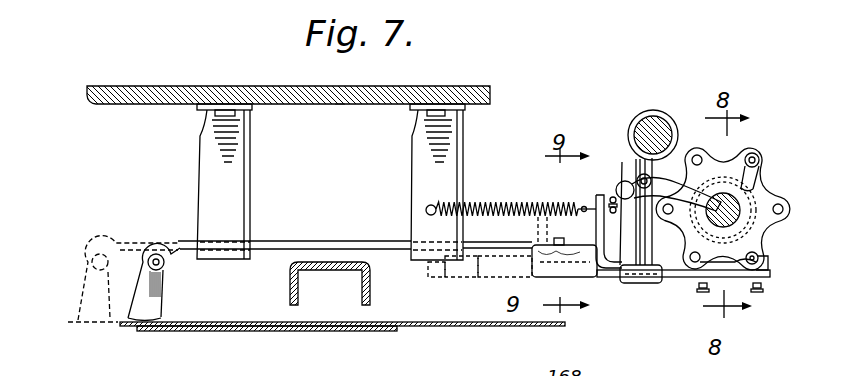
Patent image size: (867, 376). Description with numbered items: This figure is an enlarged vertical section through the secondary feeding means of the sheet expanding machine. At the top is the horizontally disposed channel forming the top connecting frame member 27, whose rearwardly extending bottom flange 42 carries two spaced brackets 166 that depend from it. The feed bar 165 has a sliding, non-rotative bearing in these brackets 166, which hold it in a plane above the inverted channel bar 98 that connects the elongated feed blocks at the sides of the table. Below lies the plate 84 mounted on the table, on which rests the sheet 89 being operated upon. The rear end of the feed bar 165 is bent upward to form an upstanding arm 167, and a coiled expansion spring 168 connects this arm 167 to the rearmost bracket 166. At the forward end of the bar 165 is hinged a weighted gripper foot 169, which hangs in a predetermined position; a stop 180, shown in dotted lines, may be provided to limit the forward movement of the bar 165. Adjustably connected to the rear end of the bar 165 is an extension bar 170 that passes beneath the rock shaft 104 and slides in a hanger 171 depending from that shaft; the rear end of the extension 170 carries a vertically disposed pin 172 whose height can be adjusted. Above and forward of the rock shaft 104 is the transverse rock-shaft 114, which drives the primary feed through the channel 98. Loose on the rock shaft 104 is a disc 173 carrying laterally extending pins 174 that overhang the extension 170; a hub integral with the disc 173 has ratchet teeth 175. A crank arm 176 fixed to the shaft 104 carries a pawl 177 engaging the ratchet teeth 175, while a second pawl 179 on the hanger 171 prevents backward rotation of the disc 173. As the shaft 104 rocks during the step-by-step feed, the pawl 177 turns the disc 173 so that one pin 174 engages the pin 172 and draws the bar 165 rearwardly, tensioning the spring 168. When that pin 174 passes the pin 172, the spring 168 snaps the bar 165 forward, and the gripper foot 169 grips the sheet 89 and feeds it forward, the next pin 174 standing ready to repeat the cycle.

The top connecting frame member 27 is at (145, 96).
The bottom flange 42 is at (333, 105).
The brackets 166 is at (241, 167).
The feed bar 165 is at (321, 240).
The gripper foot 169 is at (163, 268).
The inverted channel bar 98 is at (291, 288).
The sheet 89 is at (261, 322).
The plate 84 is at (292, 332).
The coiled expansion spring 168 is at (486, 203).
The stop 180 is at (437, 278).
The extension bar 170 is at (612, 278).
The hanger 171 is at (641, 283).
The upstanding arm 167 is at (599, 194).
The transverse rock-shaft 114 is at (654, 118).
The second pawl 179 is at (662, 187).
The rock shaft 104 is at (748, 198).
The pins 174 is at (669, 215).
The pawl 177 is at (748, 155).
The crank arm 176 is at (751, 186).
The ratchet teeth 175 is at (755, 185).
The disc 173 is at (758, 236).
The vertically disposed pin 172 is at (766, 262).